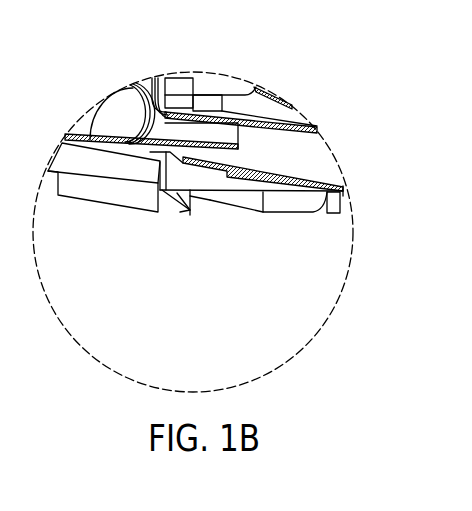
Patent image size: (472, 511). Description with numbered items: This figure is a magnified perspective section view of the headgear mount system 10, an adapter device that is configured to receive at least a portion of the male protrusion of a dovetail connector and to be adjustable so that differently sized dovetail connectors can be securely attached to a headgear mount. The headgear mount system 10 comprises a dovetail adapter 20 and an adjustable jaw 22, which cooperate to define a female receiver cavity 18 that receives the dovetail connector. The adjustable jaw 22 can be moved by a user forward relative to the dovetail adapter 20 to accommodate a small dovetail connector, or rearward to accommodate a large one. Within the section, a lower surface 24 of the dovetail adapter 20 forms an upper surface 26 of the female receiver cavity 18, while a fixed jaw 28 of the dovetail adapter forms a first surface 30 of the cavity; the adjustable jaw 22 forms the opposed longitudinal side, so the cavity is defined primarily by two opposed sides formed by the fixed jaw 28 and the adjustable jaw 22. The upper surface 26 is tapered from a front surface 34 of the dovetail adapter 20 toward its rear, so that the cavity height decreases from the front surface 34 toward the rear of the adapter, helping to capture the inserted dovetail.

The headgear mount system 10 is at (338, 98).
The female receiver cavity 18 is at (245, 238).
The dovetail adapter 20 is at (163, 184).
The adjustable jaw 22 is at (107, 196).
The lower surface 24 is at (203, 191).
The upper surface 26 is at (263, 193).
The fixed jaw 28 is at (327, 212).
The first surface 30 is at (297, 212).
The front surface 34 is at (344, 200).